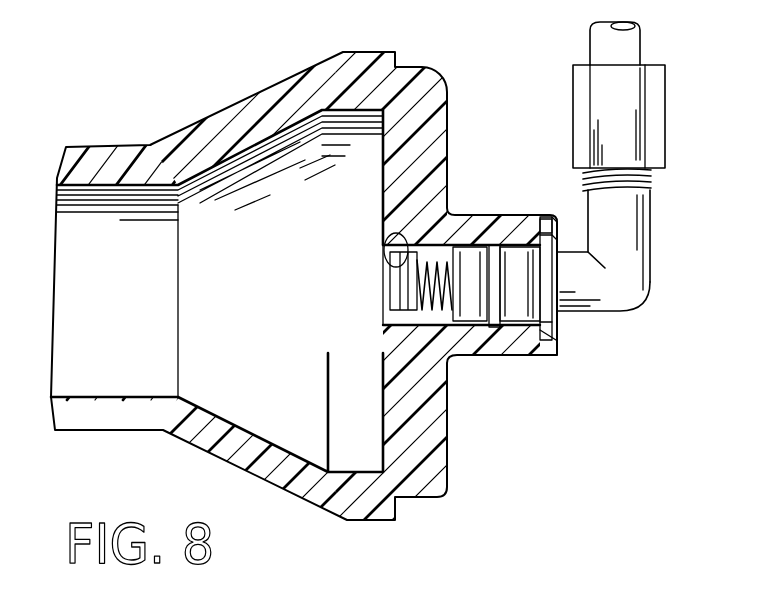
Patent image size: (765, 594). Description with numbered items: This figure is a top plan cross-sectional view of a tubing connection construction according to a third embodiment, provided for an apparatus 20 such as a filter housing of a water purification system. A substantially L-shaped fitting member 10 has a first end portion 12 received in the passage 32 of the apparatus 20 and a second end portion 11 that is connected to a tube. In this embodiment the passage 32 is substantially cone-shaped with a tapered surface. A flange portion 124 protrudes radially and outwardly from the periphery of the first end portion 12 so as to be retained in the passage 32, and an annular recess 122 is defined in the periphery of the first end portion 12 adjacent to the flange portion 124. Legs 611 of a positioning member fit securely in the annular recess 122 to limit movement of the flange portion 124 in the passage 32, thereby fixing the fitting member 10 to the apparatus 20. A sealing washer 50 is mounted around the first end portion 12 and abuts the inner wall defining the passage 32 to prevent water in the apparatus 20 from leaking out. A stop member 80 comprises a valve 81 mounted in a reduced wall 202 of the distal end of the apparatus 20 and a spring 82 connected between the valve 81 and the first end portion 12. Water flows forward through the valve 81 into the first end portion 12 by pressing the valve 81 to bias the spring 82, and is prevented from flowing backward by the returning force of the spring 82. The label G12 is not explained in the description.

The apparatus 20 is at (437, 84).
The reduced wall 202 is at (388, 236).
The stop member 80 is at (383, 250).
The valve 81 is at (394, 276).
The spring 82 is at (416, 312).
The sealing washer 50 is at (486, 357).
The passage 32 is at (492, 246).
The first end portion 12 is at (523, 357).
The legs 611 is at (560, 340).
The flange portion 124 is at (538, 224).
The annular recess 122 is at (556, 216).
The gap G12 is at (560, 342).
The second end portion 11 is at (650, 234).
The fitting member 10 is at (655, 309).